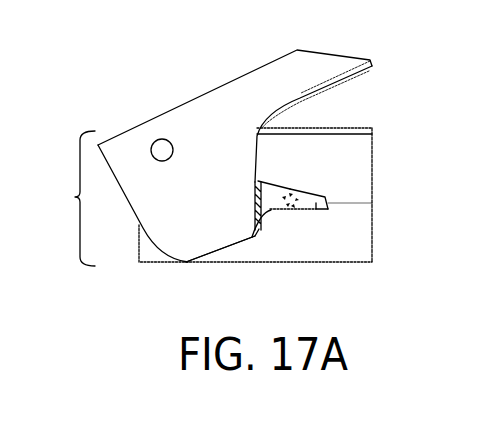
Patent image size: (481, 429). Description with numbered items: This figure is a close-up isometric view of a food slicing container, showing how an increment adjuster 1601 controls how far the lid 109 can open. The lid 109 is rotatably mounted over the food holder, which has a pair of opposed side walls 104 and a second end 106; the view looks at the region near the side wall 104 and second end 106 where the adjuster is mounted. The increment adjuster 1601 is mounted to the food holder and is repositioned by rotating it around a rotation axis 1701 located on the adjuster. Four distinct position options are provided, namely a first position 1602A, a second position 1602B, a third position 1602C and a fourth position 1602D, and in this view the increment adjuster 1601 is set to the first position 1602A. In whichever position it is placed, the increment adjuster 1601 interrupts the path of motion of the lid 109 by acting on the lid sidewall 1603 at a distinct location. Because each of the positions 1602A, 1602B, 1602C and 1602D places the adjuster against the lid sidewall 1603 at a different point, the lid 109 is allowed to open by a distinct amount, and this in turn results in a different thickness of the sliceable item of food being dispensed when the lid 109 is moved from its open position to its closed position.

The lid 109 is at (194, 102).
The second end 106 is at (76, 196).
The side wall 104 is at (350, 152).
The first position 1602A is at (255, 183).
The second position 1602B is at (328, 192).
The third position 1602C is at (272, 213).
The fourth position 1602D is at (329, 205).
The increment adjuster 1601 is at (318, 210).
The lid sidewall 1603 is at (217, 226).
The rotation axis 1701 is at (287, 205).